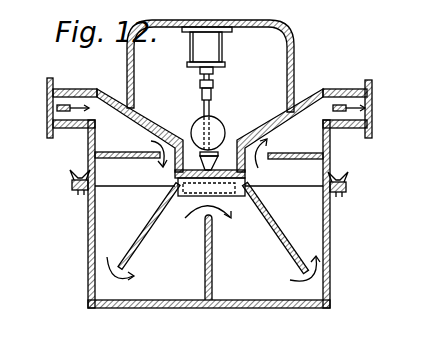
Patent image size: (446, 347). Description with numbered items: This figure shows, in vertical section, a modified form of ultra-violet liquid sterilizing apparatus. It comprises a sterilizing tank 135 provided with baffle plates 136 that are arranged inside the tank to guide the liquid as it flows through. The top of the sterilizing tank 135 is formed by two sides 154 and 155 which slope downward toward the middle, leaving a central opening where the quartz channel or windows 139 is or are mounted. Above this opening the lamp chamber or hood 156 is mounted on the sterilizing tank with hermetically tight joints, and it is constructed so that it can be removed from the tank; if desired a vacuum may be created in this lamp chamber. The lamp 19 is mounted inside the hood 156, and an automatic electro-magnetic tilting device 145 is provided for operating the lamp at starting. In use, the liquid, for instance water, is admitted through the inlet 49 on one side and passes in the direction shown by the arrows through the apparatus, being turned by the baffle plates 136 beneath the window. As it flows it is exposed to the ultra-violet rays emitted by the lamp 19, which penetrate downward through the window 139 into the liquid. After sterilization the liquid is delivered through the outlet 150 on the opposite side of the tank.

The lamp 19 is at (219, 121).
The inlet pipe 49 is at (47, 108).
The sterilizing tank 135 is at (88, 224).
The baffle plates 136 is at (284, 220).
The quartz channel or windows 139 is at (232, 198).
The automatic electro-magnetic tilting device 145 is at (222, 50).
The outlet 150 is at (372, 112).
The side of the tank top 154 is at (138, 101).
The side of the tank top 155 is at (280, 130).
The lamp chamber or hood 156 is at (183, 23).